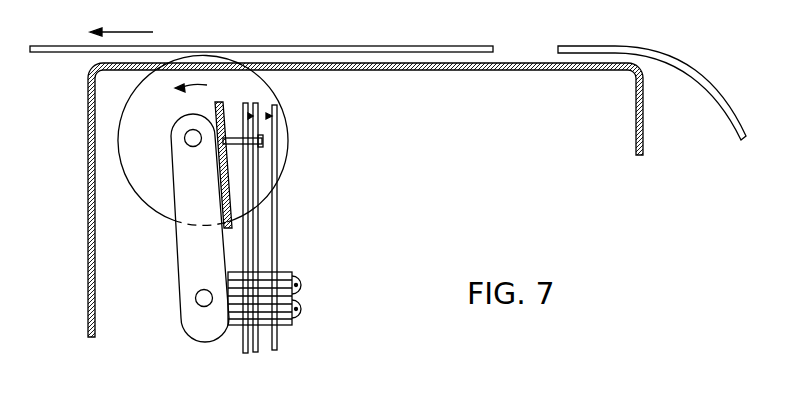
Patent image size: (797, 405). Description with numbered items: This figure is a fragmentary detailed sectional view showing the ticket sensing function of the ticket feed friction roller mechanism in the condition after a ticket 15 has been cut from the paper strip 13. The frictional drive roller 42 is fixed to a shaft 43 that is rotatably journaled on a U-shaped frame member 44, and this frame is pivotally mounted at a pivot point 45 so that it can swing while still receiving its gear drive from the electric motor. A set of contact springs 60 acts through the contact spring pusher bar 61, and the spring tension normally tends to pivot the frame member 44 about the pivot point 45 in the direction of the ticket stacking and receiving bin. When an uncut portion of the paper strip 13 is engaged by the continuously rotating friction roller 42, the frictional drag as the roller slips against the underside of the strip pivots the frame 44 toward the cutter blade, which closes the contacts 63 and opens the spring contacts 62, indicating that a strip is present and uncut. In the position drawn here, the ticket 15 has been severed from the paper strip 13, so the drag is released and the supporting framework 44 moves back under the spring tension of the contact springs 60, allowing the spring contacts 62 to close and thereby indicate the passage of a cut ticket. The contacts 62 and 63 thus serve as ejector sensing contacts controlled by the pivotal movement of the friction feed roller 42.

The paper strip 13 is at (700, 72).
The ticket 15 is at (387, 47).
The frictional drive roller 42 is at (142, 208).
The shaft 43 is at (185, 138).
The U-shaped frame member 44 is at (183, 250).
The pivot point 45 is at (195, 298).
The set of contact springs 60 is at (278, 208).
The contact spring pusher bar 61 is at (234, 137).
The spring contacts 62 is at (254, 106).
The contacts 63 is at (267, 118).